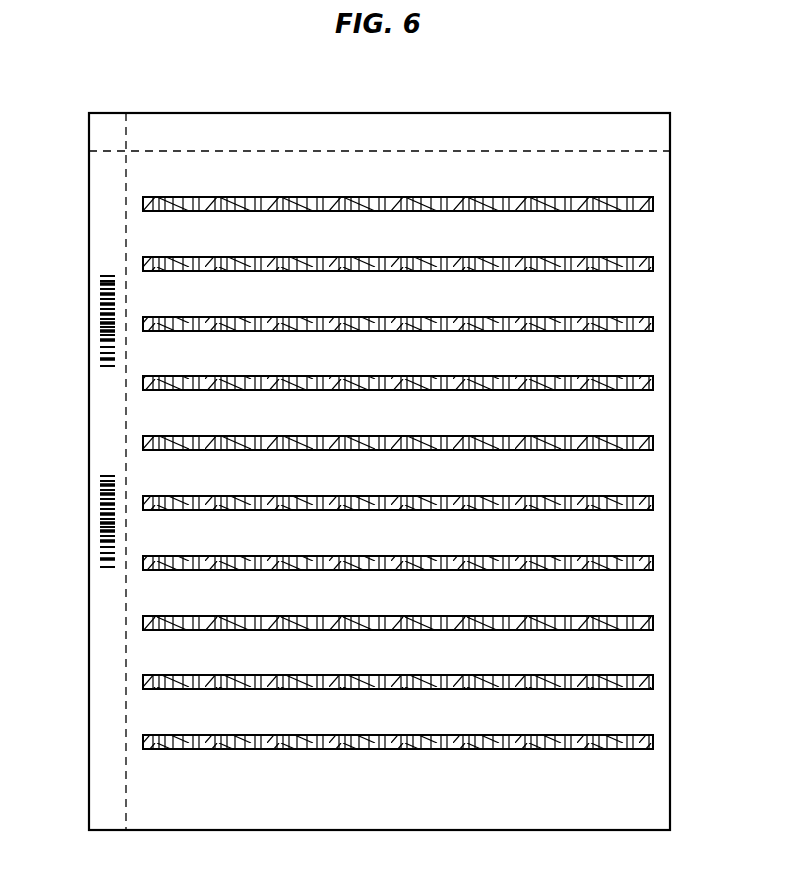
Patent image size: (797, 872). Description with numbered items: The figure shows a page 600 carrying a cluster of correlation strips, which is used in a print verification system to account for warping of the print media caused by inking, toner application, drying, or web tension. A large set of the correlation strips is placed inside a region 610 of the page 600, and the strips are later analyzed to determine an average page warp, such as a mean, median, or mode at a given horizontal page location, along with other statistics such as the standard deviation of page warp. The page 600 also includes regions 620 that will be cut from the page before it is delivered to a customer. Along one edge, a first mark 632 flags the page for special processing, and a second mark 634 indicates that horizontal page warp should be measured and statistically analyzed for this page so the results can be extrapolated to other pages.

The page 600 is at (545, 66).
The region 610 is at (652, 170).
The regions 620 is at (103, 130).
The first mark 632 is at (100, 308).
The second mark 634 is at (100, 522).